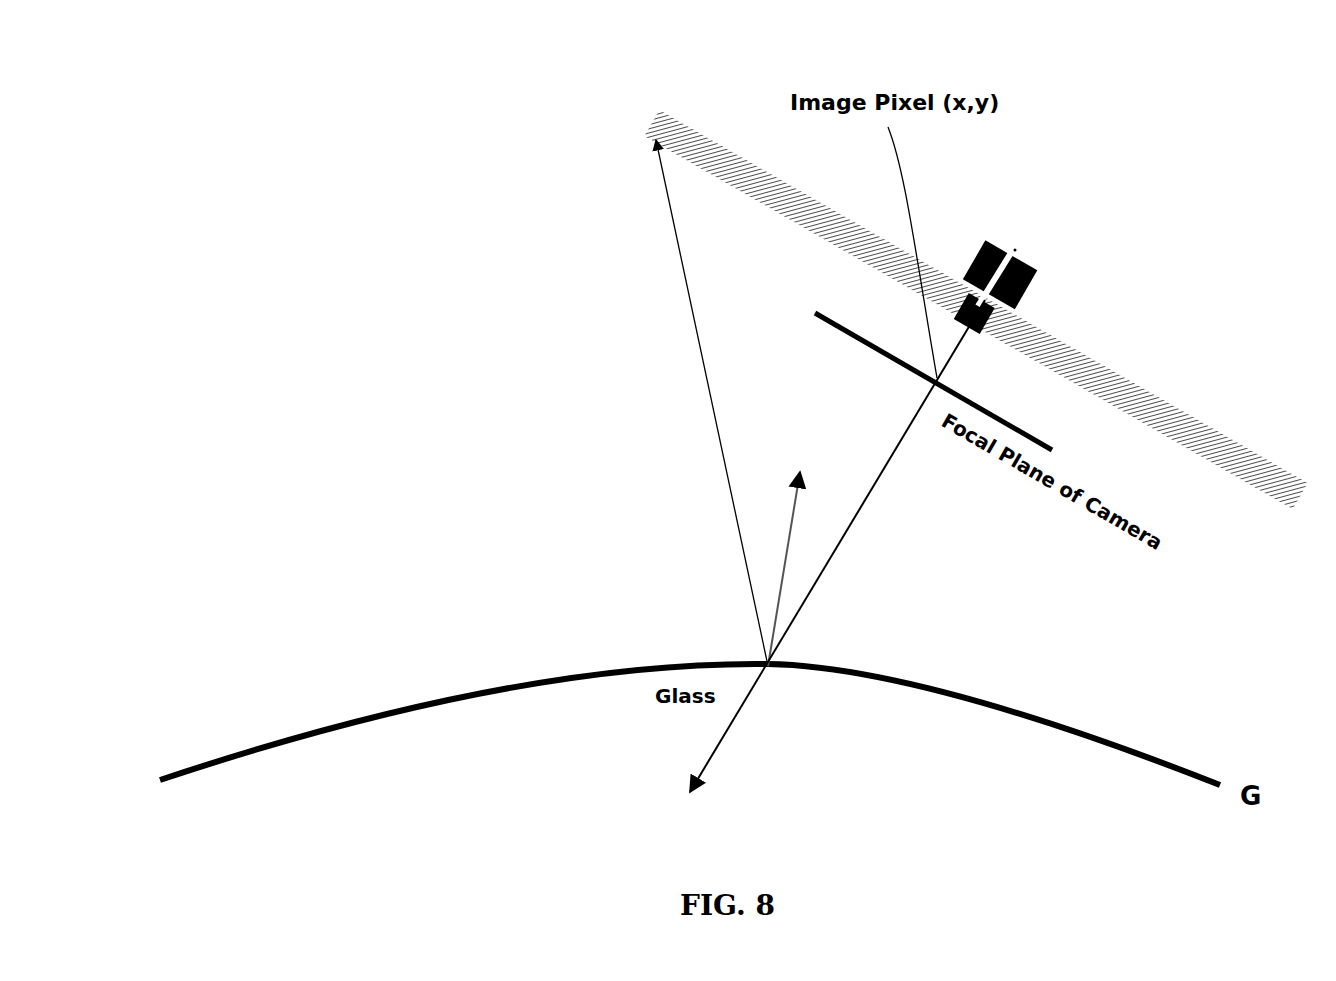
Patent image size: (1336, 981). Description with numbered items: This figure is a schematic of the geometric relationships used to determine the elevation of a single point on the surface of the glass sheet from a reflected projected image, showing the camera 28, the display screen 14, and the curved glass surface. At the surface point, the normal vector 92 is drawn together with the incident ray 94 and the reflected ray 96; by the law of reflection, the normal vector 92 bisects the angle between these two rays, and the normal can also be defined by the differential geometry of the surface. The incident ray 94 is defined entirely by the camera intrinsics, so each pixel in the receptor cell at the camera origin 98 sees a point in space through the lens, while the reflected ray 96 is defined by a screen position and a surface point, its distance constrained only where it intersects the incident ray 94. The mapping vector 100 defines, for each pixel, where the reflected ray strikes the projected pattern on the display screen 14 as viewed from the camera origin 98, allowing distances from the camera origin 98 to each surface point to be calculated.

The display screen 14 is at (1208, 433).
The camera 28 is at (1073, 291).
The camera origin 98 is at (1015, 247).
The mapping vector 100 is at (757, 165).
The reflected ray 96 is at (682, 280).
The normal vector 92 is at (806, 536).
The incident ray 94 is at (912, 428).